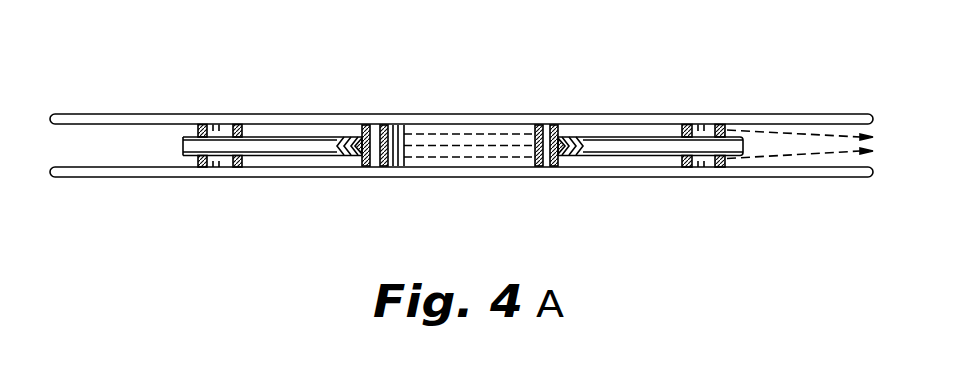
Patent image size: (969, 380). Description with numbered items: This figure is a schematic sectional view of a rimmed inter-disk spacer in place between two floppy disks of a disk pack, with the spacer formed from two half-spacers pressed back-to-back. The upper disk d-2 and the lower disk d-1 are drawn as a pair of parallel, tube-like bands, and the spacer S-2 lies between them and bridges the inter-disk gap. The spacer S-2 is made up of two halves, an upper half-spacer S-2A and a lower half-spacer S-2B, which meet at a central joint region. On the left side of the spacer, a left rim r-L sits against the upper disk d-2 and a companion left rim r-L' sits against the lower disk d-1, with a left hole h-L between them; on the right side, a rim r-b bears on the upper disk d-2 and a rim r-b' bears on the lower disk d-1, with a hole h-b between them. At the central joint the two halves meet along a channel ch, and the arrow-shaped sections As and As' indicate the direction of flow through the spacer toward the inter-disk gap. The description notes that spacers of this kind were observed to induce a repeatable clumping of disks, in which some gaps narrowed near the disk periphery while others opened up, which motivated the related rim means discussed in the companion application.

The upper duct d-2 is at (62, 113).
The lower duct d-1 is at (68, 178).
The sleeve connector S-2 is at (168, 145).
The sleeve upper half S-2A is at (622, 135).
The sleeve lower half S-2B is at (628, 157).
The left upper sealing ring r-L is at (198, 101).
The left lower sealing ring r-L' is at (205, 188).
The left hole h-L is at (217, 124).
The right upper sealing ring r-b is at (739, 103).
The right lower sealing ring r-b' is at (741, 183).
The right hole h-b is at (701, 124).
The arrow section As is at (438, 115).
The arrow section prime As' is at (481, 176).
The channel ch is at (546, 118).